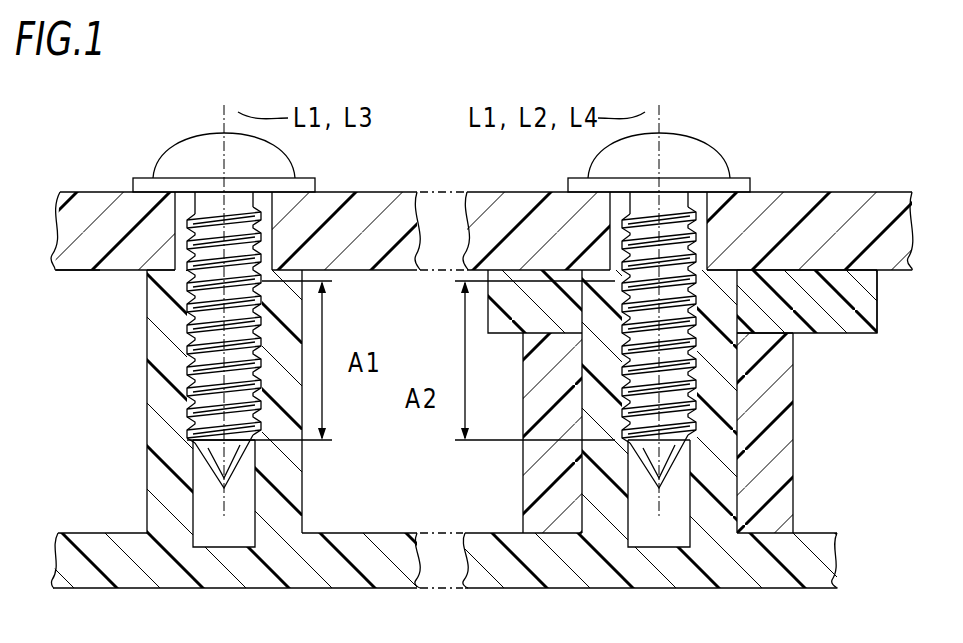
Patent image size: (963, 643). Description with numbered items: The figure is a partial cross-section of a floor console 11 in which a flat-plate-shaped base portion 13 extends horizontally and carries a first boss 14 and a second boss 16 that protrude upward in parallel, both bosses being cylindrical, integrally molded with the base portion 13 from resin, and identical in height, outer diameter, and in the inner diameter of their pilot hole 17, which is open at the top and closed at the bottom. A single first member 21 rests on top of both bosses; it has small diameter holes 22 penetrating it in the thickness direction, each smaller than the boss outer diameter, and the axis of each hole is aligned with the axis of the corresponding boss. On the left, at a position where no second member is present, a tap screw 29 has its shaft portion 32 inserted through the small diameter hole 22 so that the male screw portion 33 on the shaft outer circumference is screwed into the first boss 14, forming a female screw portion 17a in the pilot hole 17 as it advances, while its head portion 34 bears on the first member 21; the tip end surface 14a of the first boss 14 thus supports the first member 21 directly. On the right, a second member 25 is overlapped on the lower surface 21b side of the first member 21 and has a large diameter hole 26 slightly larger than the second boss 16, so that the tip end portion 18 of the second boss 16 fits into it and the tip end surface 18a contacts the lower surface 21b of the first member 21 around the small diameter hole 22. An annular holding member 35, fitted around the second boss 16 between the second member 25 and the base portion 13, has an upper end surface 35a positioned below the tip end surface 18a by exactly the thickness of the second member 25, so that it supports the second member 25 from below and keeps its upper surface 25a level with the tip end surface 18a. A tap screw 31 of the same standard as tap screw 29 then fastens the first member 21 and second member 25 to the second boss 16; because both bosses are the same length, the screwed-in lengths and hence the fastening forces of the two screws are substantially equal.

The floor console 11 is at (840, 138).
The base portion 13 is at (480, 597).
The first boss 14 is at (158, 477).
The tip end surface of first boss 14a is at (148, 262).
The second boss 16 is at (745, 441).
The pilot hole 17 is at (207, 540).
The female screw portion 17a is at (188, 418).
The tip end portion of second boss 18 is at (592, 300).
The tip end surface of second boss 18a is at (728, 267).
The first member 21 is at (475, 191).
The lower surface of first member 21b is at (72, 272).
The small diameter hole 22 is at (268, 196).
The second member 25 is at (878, 322).
The upper surface of second member 25a is at (878, 284).
The large diameter hole 26 is at (796, 267).
The tap screw 29 is at (172, 152).
The tap screw 31 is at (695, 150).
The shaft portion 32 is at (196, 328).
The male screw portion 33 is at (193, 373).
The head portion 34 is at (459, 305).
The holding member 35 is at (786, 506).
The upper end surface of holding member 35a is at (797, 335).